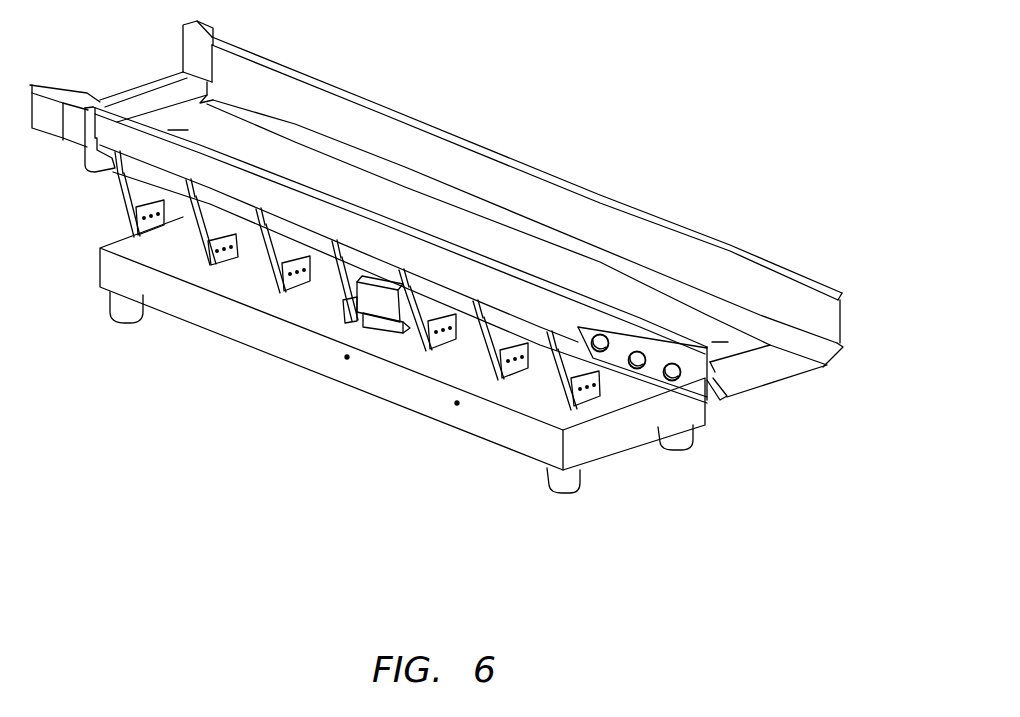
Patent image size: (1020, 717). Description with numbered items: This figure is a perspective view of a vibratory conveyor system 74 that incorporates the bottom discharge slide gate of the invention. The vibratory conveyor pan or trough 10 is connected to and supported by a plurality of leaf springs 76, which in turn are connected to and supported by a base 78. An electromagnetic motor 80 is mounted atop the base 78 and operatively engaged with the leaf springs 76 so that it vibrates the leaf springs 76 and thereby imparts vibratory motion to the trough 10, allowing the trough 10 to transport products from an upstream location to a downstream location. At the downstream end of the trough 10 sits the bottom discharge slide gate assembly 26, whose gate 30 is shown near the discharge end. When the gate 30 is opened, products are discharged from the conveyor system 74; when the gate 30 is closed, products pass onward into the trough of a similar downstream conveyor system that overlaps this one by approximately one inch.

The trough 10 is at (405, 114).
The vibratory conveyor system 74 is at (642, 172).
The leaf springs 76 is at (263, 267).
The base 78 is at (485, 432).
The electromagnetic motor 80 is at (406, 335).
The gate 30 is at (760, 364).
The bottom discharge slide gate assembly 26 is at (750, 408).